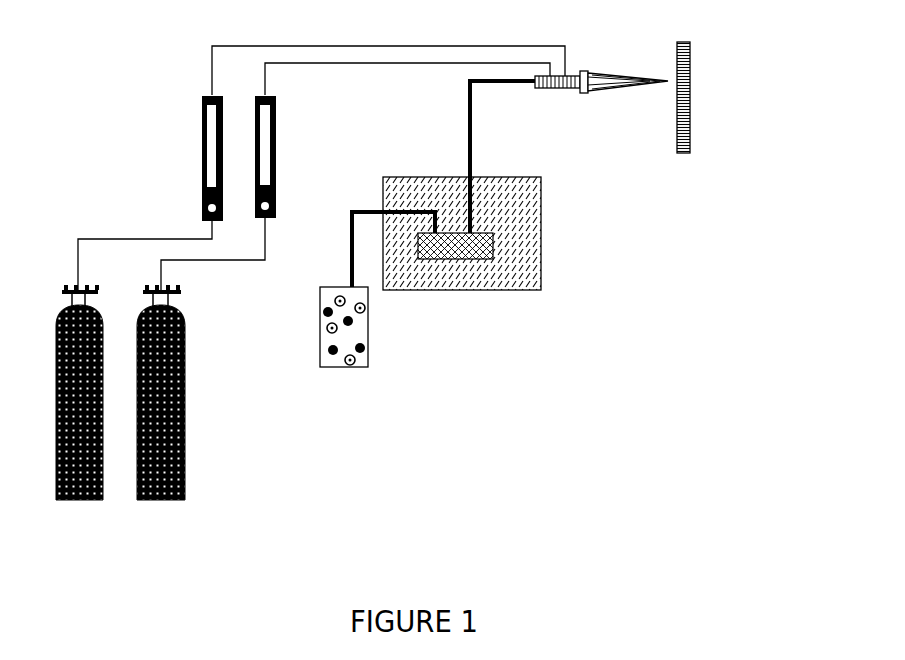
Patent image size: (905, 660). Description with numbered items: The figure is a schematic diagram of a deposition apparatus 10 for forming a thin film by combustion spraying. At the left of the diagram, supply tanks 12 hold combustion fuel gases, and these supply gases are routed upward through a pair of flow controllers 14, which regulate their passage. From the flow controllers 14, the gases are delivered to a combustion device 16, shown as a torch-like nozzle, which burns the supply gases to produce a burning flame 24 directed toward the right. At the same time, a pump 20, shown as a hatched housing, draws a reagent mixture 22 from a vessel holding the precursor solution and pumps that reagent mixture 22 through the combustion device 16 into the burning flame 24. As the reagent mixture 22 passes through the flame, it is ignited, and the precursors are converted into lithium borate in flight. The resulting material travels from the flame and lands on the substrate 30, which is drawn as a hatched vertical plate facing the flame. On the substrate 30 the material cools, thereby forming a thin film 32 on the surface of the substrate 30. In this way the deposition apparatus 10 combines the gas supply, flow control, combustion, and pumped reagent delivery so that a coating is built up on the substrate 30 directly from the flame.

The deposition apparatus 10 is at (134, 75).
The supply tanks 12 is at (120, 434).
The flow controllers 14 is at (189, 158).
The combustion device 16 is at (595, 108).
The pump 20 is at (446, 212).
The reagent mixture 22 is at (348, 351).
The burning flame 24 is at (607, 69).
The substrate 30 is at (693, 122).
The thin film 32 is at (674, 113).